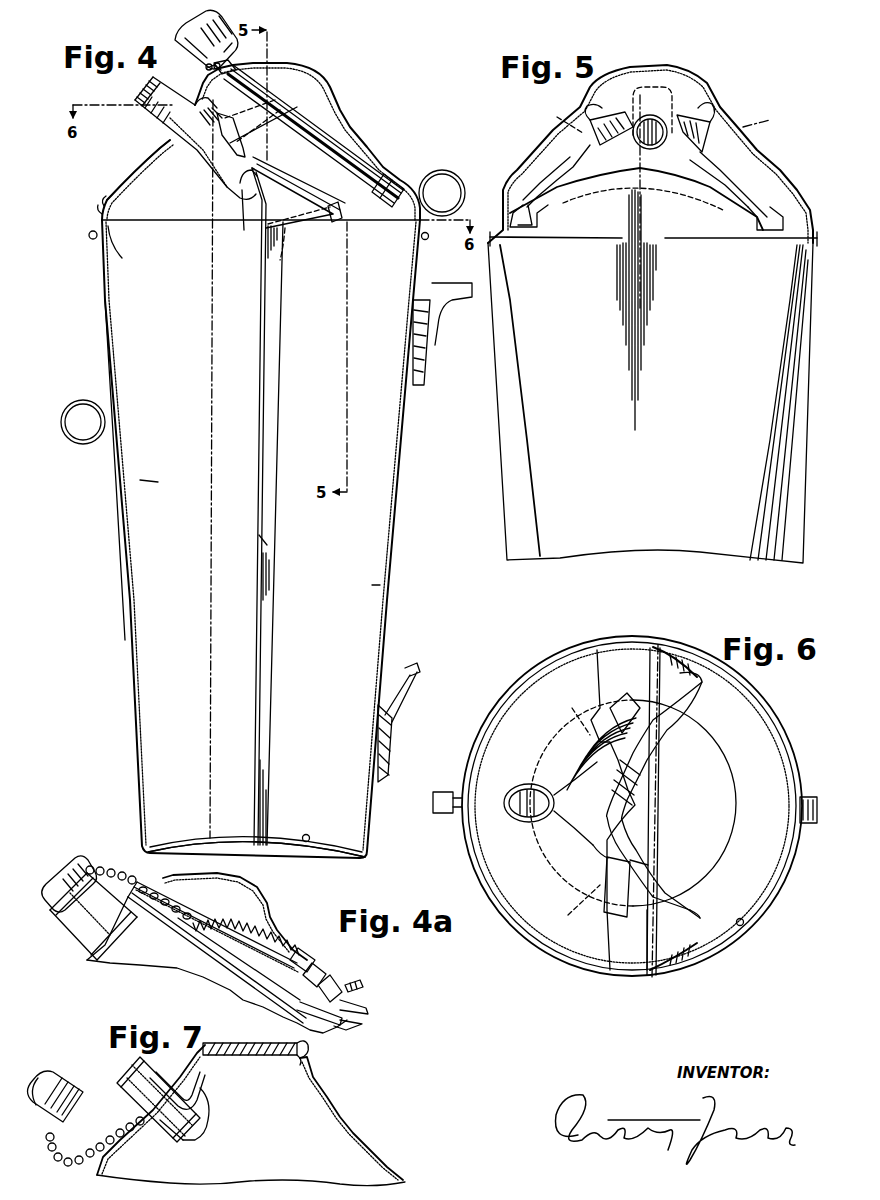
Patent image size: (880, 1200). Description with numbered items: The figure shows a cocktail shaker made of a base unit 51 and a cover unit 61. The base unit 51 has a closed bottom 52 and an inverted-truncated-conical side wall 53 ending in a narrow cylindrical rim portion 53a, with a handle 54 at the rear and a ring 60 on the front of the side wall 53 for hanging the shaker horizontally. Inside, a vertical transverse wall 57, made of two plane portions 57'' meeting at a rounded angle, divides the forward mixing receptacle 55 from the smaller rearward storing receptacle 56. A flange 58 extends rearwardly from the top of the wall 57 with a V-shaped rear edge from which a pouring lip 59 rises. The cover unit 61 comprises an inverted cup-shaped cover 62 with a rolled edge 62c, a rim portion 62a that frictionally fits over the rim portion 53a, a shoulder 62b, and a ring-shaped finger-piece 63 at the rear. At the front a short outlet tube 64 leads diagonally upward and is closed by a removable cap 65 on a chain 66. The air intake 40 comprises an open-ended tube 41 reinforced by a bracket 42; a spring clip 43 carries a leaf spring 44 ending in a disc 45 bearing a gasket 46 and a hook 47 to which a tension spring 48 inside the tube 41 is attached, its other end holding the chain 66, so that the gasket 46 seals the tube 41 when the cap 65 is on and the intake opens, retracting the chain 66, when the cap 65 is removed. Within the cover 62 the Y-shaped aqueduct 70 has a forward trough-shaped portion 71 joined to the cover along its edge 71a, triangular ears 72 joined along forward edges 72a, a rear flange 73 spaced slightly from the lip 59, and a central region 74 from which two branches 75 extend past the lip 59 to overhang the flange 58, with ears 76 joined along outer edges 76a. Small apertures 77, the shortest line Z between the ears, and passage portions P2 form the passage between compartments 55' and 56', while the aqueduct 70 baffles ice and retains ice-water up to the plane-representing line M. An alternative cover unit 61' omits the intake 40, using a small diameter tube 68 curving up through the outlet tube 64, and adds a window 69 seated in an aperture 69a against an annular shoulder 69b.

In FIG. 4, the air intake unit 40 is at (320, 128).
In FIG. 4a, the air intake unit 40 is at (260, 943).
In FIG. 4a, the open-ended tube 41 is at (205, 940).
In FIG. 4, the bracket 42 is at (385, 178).
In FIG. 4a, the bracket 42 is at (307, 950).
In FIG. 4a, the spring clip 43 is at (315, 970).
In FIG. 4a, the leaf spring 44 is at (297, 1020).
In FIG. 4a, the disc 45 is at (345, 1020).
In FIG. 4a, the gasket 46 is at (345, 1008).
In FIG. 4a, the hook 47 is at (320, 998).
In FIG. 4a, the tension spring 48 is at (245, 962).
In FIG. 4, the base unit 51 is at (408, 498).
In FIG. 4, the closed bottom 52 is at (307, 843).
In FIG. 6, the closed bottom 52 is at (710, 773).
In FIG. 4, the side wall 53 is at (116, 483).
In FIG. 5, the side wall 53 is at (770, 528).
In FIG. 4, the rim portion 53a is at (118, 252).
In FIG. 4, the handle 54 is at (433, 325).
In FIG. 6, the handle 54 is at (803, 843).
In FIG. 4, the mixing receptacle 55 is at (117, 504).
In FIG. 4, the mixing compartment 55' is at (116, 556).
In FIG. 4, the storing receptacle 56 is at (407, 579).
In FIG. 4, the storing compartment 56' is at (402, 606).
In FIG. 4, the transverse wall 57 is at (252, 506).
In FIG. 4, the plane portions 57'' is at (244, 550).
In FIG. 6, the plane portions 57'' is at (666, 827).
In FIG. 4, the flange 58 is at (275, 225).
In FIG. 5, the flange 58 is at (750, 236).
In FIG. 6, the flange 58 is at (673, 660).
In FIG. 4, the pouring lip 59 is at (290, 250).
In FIG. 5, the pouring lip 59 is at (700, 217).
In FIG. 6, the pouring lip 59 is at (653, 758).
In FIG. 4, the ring 60 is at (85, 400).
In FIG. 6, the ring 60 is at (445, 793).
In FIG. 4, the cover unit 61 is at (392, 138).
In FIG. 4a, the cover unit 61 is at (217, 953).
In FIG. 7, the modified cover unit 61' is at (251, 1115).
In FIG. 4, the cover 62 is at (356, 120).
In FIG. 5, the cover 62 is at (652, 155).
In FIG. 6, the cover 62 is at (745, 928).
In FIG. 4, the rim portion 62a is at (100, 216).
In FIG. 4, the shoulder 62b is at (106, 202).
In FIG. 4, the rolled edge 62c is at (90, 236).
In FIG. 4, the finger-piece 63 is at (442, 170).
In FIG. 4a, the finger-piece 63 is at (357, 987).
In FIG. 4, the outlet tube 64 is at (160, 123).
In FIG. 5, the outlet tube 64 is at (672, 93).
In FIG. 6, the outlet tube 64 is at (527, 792).
In FIG. 4a, the outlet tube 64 is at (90, 950).
In FIG. 7, the outlet tube 64 is at (120, 1092).
In FIG. 4, the cap 65 is at (183, 36).
In FIG. 4a, the cap 65 is at (50, 898).
In FIG. 7, the cap 65 is at (48, 1078).
In FIG. 4, the chain 66 is at (230, 66).
In FIG. 4a, the chain 66 is at (117, 857).
In FIG. 7, the chain 66 is at (97, 1137).
In FIG. 7, the small diameter tube 68 is at (200, 1082).
In FIG. 7, the window 69 is at (267, 1038).
In FIG. 7, the aperture 69a is at (290, 1053).
In FIG. 7, the annular shoulder 69b is at (302, 1063).
In FIG. 4, the aqueduct 70 is at (205, 192).
In FIG. 5, the aqueduct 70 is at (587, 157).
In FIG. 4, the forward trough-shaped portion 71 is at (203, 150).
In FIG. 5, the forward trough-shaped portion 71 is at (653, 155).
In FIG. 6, the forward trough-shaped portion 71 is at (538, 830).
In FIG. 7, the forward trough-shaped portion 71 is at (180, 1127).
In FIG. 4, the edge 71a is at (163, 153).
In FIG. 5, the edge 71a is at (652, 124).
In FIG. 4, the ears 72 is at (228, 112).
In FIG. 5, the ears 72 is at (600, 117).
In FIG. 6, the ears 72 is at (590, 877).
In FIG. 7, the ears 72 is at (205, 1103).
In FIG. 4, the forward edges 72a is at (197, 95).
In FIG. 5, the forward edges 72a is at (608, 107).
In FIG. 6, the forward edges 72a is at (577, 853).
In FIG. 4, the flange 73 is at (250, 178).
In FIG. 6, the flange 73 is at (637, 805).
In FIG. 4, the central region 74 is at (242, 192).
In FIG. 6, the central region 74 is at (640, 818).
In FIG. 4, the branches 75 is at (340, 220).
In FIG. 5, the branches 75 is at (553, 227).
In FIG. 6, the branches 75 is at (680, 690).
In FIG. 4, the ears 76 is at (262, 160).
In FIG. 5, the ears 76 is at (553, 200).
In FIG. 6, the ears 76 is at (595, 940).
In FIG. 6, the outer edge 76a is at (630, 696).
In FIG. 4, the aperture 77 is at (273, 118).
In FIG. 5, the aperture 77 is at (583, 143).
In FIG. 6, the aperture 77 is at (610, 740).
In FIG. 4, the plane-representing line M is at (211, 405).
In FIG. 4, the dash-dot line Z is at (254, 115).
In FIG. 5, the dash-dot line Z is at (661, 122).
In FIG. 6, the dash-dot line Z is at (576, 812).
In FIG. 5, the passage portions P2 is at (535, 183).